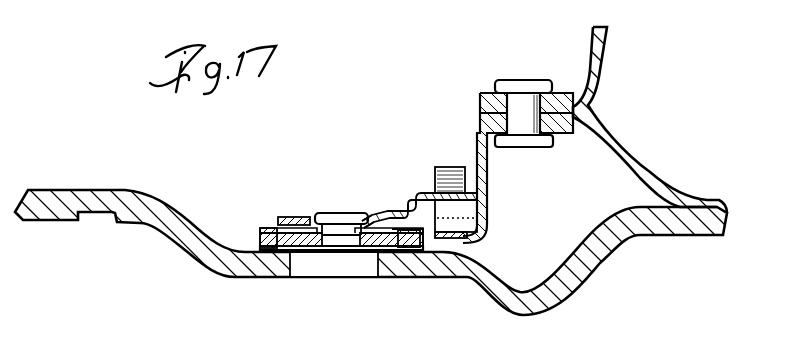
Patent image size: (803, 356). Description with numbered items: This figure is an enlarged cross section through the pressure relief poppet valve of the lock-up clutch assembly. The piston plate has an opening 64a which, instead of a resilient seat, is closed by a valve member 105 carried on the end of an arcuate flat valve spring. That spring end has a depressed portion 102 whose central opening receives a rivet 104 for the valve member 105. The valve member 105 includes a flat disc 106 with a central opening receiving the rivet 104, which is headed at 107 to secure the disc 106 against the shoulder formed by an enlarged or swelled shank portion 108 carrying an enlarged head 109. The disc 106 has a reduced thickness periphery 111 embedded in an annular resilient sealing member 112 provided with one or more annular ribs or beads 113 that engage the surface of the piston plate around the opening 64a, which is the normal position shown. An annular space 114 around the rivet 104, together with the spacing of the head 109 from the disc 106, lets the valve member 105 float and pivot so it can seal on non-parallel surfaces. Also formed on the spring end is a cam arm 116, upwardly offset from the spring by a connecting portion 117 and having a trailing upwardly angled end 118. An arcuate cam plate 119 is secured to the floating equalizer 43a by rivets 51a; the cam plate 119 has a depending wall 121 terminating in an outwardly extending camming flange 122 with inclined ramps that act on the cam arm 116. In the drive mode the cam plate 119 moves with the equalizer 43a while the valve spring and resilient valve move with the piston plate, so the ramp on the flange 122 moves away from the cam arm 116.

The floating equalizer 43a is at (642, 157).
The rivets 51a is at (522, 91).
The openings 64a is at (401, 178).
The depressed portion 102 is at (312, 232).
The rivet 104 is at (338, 245).
The valve member 105 is at (330, 258).
The flat disc 106 is at (258, 268).
The rivet head 107 is at (340, 268).
The enlarged shank portion 108 is at (351, 222).
The enlarged head 109 is at (377, 216).
The reduced thickness periphery 111 is at (292, 228).
The annular resilient sealing member 112 is at (433, 252).
The annular rib or bead 113 is at (403, 252).
The annular space 114 is at (301, 258).
The cam arm 116 is at (421, 186).
The connecting portion 117 is at (412, 194).
The trailing upwardly angled end 118 is at (464, 180).
The arcuate cam plate 119 is at (566, 140).
The depending wall 121 is at (484, 205).
The camming flange 122 is at (467, 242).